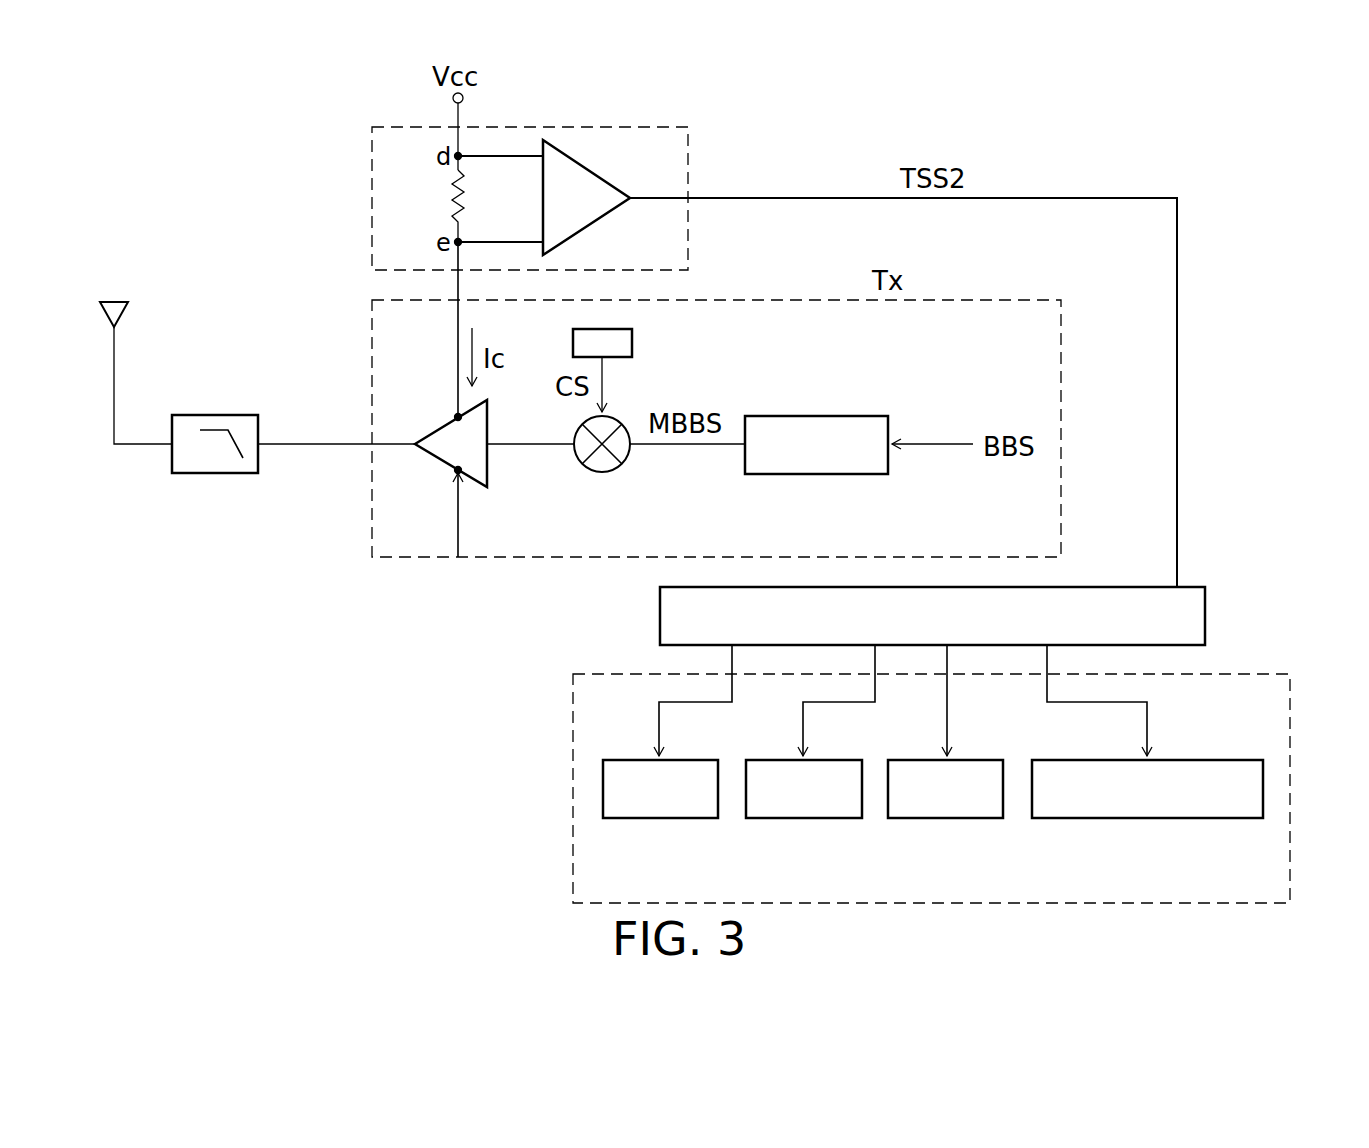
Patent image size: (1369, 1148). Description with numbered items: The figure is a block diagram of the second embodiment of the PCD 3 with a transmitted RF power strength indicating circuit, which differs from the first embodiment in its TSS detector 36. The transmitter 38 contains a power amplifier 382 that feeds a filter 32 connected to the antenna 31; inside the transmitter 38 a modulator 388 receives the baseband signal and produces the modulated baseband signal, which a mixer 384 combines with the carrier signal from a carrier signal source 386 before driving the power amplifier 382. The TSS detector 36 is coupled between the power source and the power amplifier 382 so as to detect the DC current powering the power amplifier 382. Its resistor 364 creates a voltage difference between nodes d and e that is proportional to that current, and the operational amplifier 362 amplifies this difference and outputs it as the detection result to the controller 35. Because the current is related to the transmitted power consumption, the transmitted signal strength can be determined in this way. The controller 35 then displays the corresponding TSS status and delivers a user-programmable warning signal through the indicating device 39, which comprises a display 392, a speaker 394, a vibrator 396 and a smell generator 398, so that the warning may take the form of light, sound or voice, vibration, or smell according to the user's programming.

The PCD 3 is at (200, 216).
The antenna 31 is at (98, 314).
The filter 32 is at (213, 415).
The controller 35 is at (1205, 615).
The TSS detector 36 is at (372, 156).
The operational amplifier 362 is at (580, 170).
The resistor RL 364 is at (448, 198).
The transmitter 38 is at (1061, 430).
The power amplifier 382 is at (490, 476).
The mixer 384 is at (602, 472).
The carrier signal source 386 is at (632, 343).
The modulator 388 is at (815, 416).
The indicating device 39 is at (1290, 788).
The display 392 is at (660, 818).
The speaker 394 is at (803, 818).
The vibrator 396 is at (947, 818).
The smell generator 398 is at (1147, 818).